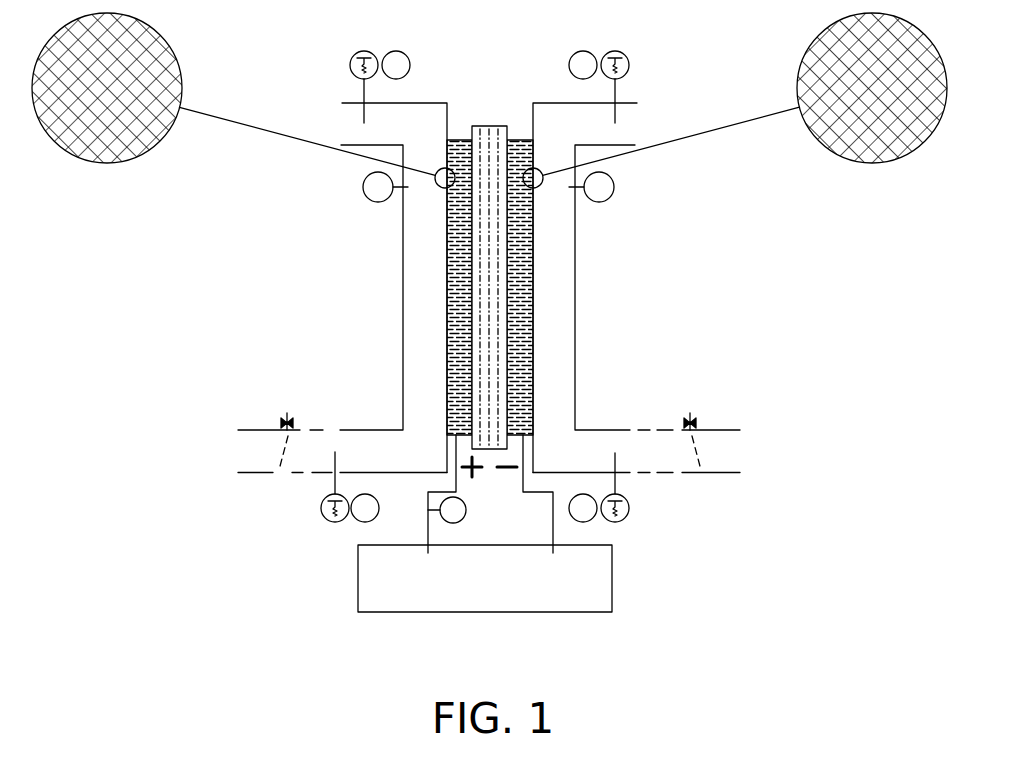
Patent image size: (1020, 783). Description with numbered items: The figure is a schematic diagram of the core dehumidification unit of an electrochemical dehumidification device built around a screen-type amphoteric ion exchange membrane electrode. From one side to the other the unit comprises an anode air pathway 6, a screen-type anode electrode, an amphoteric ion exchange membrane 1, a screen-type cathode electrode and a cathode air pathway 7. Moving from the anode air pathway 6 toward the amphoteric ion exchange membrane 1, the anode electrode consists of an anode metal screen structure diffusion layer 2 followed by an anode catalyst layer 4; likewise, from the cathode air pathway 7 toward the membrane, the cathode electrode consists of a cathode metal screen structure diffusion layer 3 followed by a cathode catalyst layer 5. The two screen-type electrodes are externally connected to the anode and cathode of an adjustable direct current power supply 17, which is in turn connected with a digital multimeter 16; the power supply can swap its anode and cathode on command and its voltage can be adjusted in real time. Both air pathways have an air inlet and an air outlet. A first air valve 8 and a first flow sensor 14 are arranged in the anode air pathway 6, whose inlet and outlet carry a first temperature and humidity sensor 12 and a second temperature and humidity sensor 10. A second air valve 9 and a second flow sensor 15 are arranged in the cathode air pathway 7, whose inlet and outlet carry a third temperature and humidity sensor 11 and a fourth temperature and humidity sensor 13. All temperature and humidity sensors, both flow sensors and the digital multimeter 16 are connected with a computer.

The amphoteric ion exchange membrane 1 is at (495, 126).
The anode metal screen structure diffusion layer 2 is at (459, 137).
The cathode metal screen structure diffusion layer 3 is at (517, 135).
The anode catalyst layer 4 is at (146, 35).
The cathode catalyst layer 5 is at (835, 35).
The anode air pathway 6 is at (415, 323).
The cathode air pathway 7 is at (565, 323).
The first air valve 8 is at (287, 416).
The second air valve 9 is at (690, 416).
The second temperature and humidity sensor 10 is at (358, 520).
The third temperature and humidity sensor 11 is at (625, 520).
The first temperature and humidity sensor 12 is at (390, 52).
The fourth temperature and humidity sensor 13 is at (610, 52).
The first flow sensor 14 is at (365, 180).
The second flow sensor 15 is at (613, 182).
The digital multimeter 16 is at (466, 512).
The adjustable direct current power supply 17 is at (585, 600).